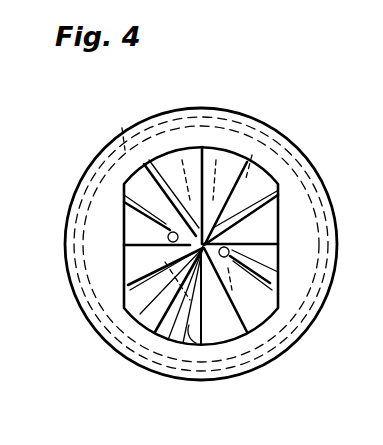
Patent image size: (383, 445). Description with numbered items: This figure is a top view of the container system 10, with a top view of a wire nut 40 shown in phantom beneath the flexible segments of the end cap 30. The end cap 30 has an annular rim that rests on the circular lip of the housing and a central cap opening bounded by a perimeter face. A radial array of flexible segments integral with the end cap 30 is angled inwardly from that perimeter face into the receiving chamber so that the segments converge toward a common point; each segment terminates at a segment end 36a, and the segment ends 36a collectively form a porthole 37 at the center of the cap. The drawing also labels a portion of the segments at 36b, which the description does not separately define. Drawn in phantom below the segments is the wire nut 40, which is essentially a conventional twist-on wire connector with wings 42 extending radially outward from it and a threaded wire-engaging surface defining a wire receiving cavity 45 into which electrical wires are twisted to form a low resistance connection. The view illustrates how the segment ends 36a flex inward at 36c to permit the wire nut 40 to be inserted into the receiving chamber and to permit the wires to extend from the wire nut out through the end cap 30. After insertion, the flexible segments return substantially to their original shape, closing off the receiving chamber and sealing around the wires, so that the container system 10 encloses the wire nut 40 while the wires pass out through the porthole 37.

The container system 10 is at (90, 130).
The end cap 30 is at (258, 366).
The segment end 36a is at (183, 343).
The spoke 36b is at (278, 182).
The inward flex location 36c is at (168, 233).
The porthole 37 is at (209, 200).
The wire nut 40 is at (258, 228).
The wings 42 is at (209, 147).
The wire receiving cavity 45 is at (164, 147).